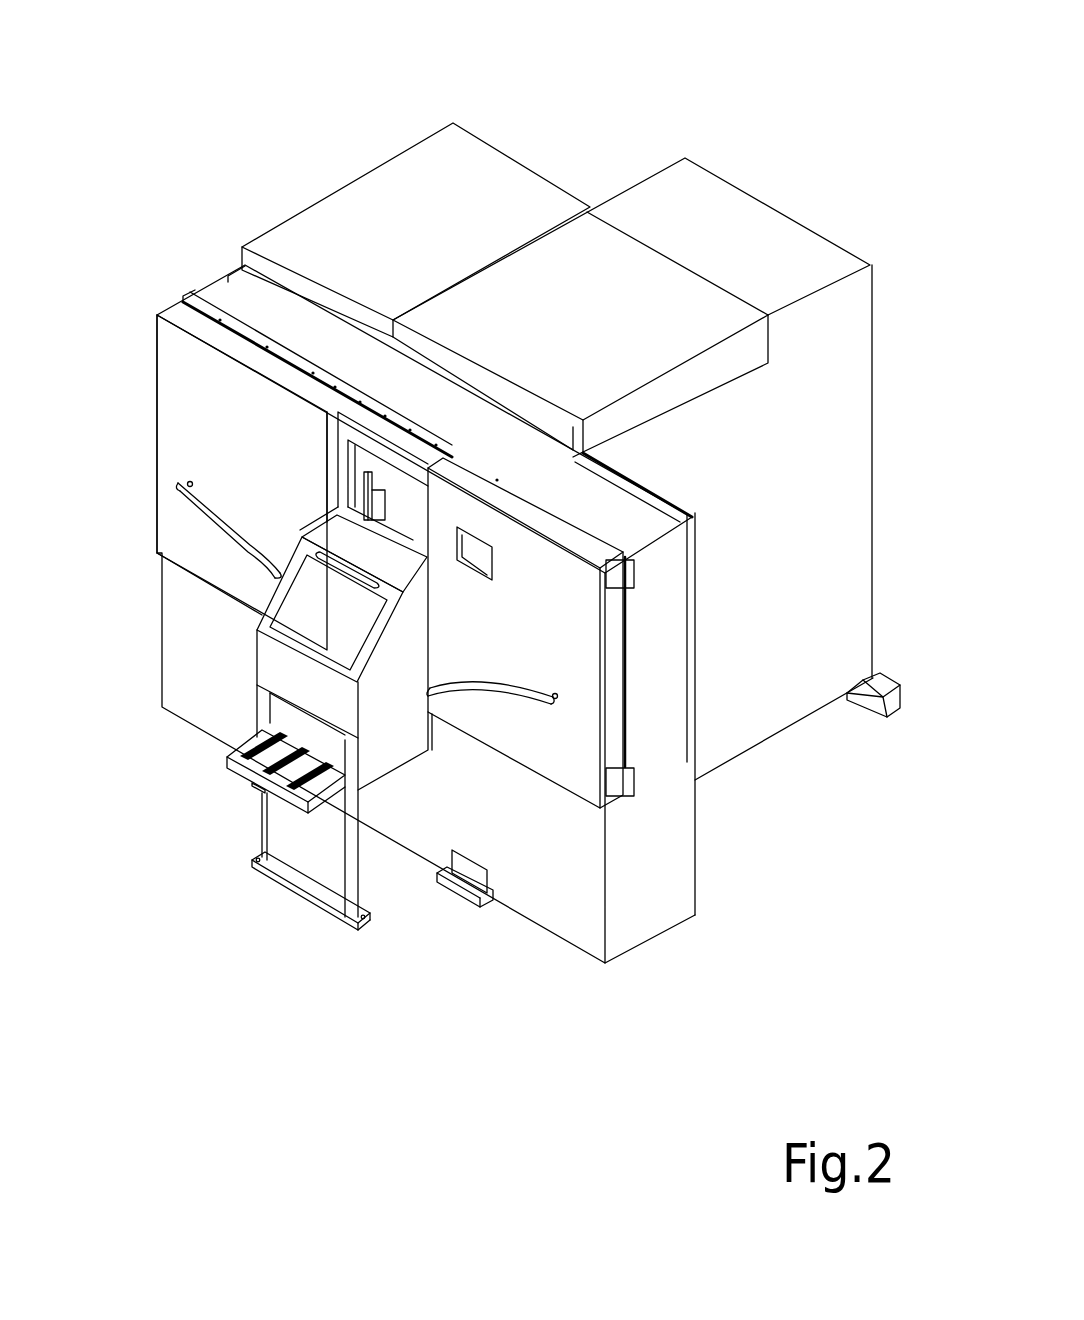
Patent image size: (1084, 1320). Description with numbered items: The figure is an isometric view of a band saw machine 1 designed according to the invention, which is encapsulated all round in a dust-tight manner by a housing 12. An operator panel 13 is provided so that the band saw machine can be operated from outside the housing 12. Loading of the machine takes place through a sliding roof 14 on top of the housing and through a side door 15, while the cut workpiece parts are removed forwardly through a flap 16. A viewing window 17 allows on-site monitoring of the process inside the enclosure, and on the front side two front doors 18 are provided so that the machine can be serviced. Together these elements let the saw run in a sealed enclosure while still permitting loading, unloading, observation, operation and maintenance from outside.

The apparatus housing 1 is at (388, 614).
The housing 12 is at (344, 230).
The operator panel 13 is at (562, 309).
The sliding roof 14 is at (659, 303).
The side door 15 is at (828, 522).
The flap 16 is at (353, 783).
The viewing window 17 is at (338, 304).
The front doors 18 is at (501, 561).